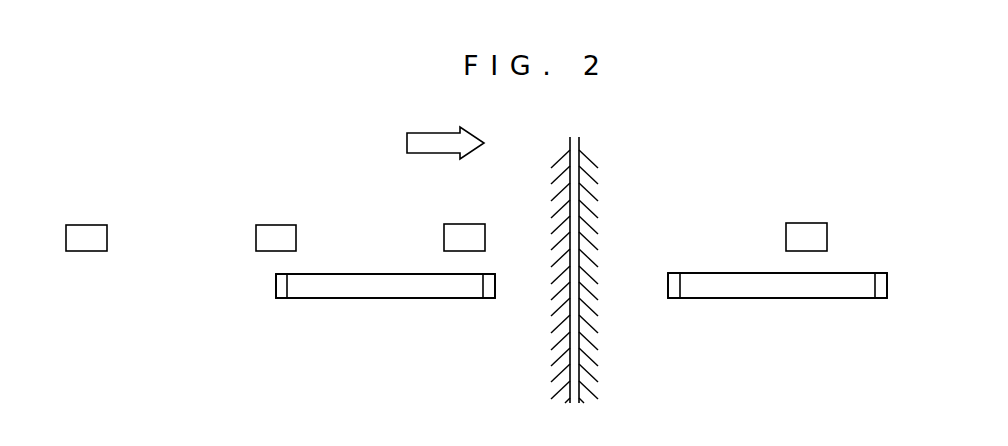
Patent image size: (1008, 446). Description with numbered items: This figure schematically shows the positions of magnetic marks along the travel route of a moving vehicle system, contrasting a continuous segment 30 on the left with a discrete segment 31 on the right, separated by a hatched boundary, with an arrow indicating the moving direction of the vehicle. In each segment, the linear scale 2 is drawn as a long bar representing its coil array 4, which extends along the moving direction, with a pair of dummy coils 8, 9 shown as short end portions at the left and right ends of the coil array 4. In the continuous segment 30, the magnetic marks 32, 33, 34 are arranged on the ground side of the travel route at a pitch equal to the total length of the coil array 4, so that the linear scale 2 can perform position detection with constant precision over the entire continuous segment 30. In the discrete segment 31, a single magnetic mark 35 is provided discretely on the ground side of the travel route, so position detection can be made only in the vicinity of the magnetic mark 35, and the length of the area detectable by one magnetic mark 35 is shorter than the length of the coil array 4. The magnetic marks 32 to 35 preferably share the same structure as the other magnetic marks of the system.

The linear scale 2 is at (424, 309).
The coil array 4 is at (373, 298).
The dummy coil 8 is at (489, 298).
The dummy coil 9 is at (281, 298).
The continuous segment 30 is at (397, 343).
The discrete segment 31 is at (779, 342).
The magnetic mark 32 is at (107, 232).
The magnetic mark 33 is at (296, 232).
The magnetic mark 34 is at (485, 230).
The magnetic mark 35 is at (827, 230).